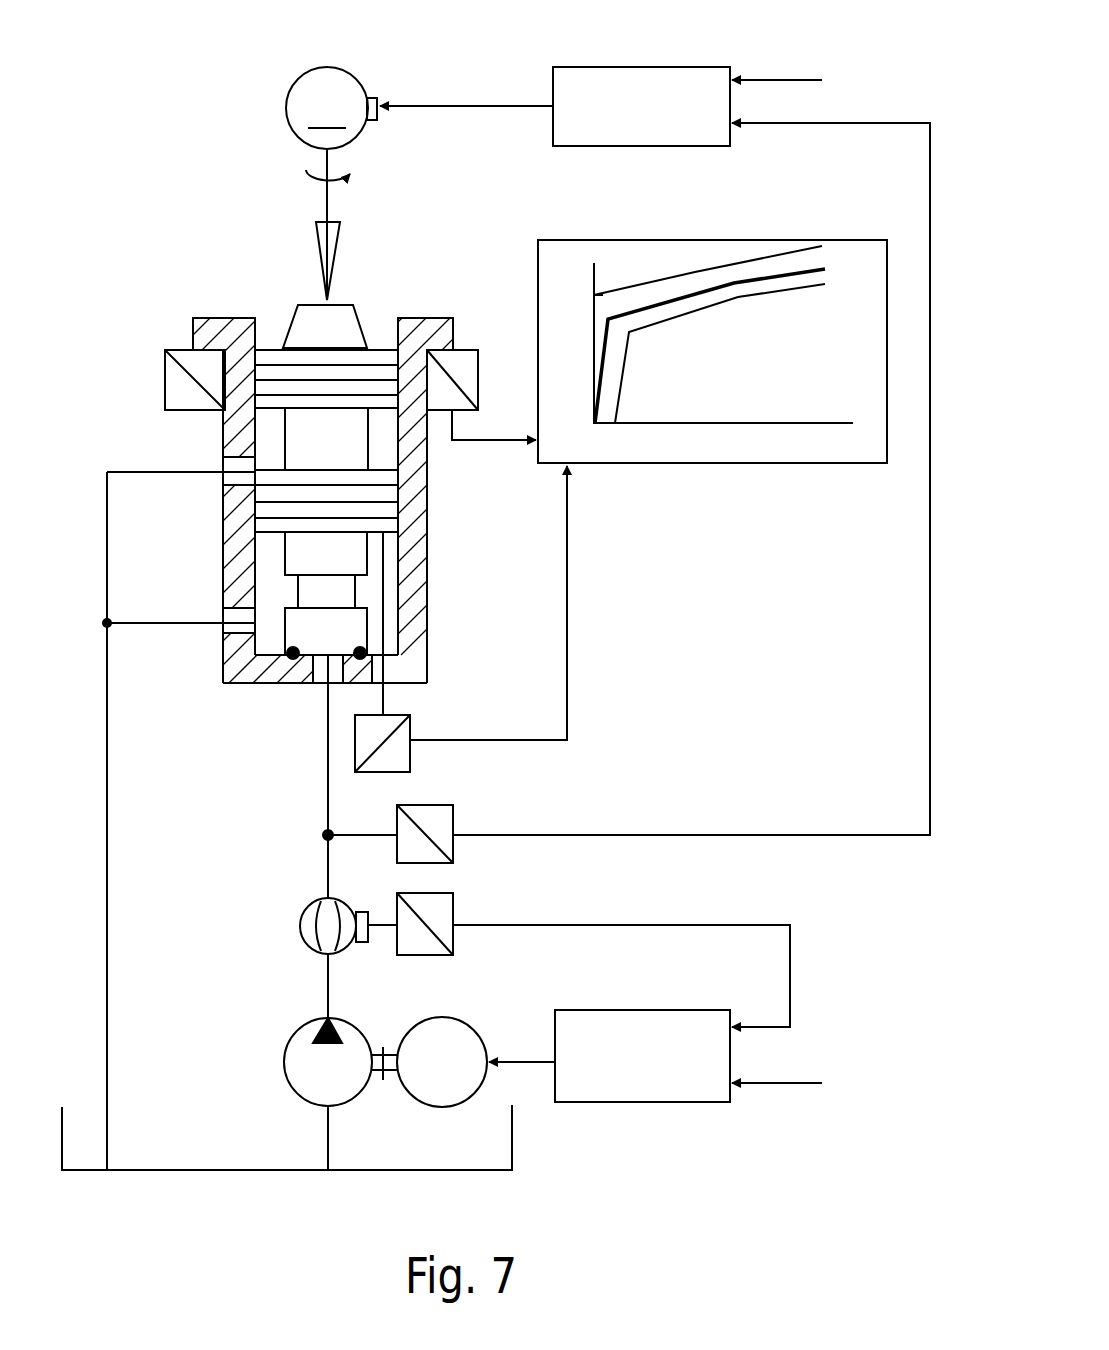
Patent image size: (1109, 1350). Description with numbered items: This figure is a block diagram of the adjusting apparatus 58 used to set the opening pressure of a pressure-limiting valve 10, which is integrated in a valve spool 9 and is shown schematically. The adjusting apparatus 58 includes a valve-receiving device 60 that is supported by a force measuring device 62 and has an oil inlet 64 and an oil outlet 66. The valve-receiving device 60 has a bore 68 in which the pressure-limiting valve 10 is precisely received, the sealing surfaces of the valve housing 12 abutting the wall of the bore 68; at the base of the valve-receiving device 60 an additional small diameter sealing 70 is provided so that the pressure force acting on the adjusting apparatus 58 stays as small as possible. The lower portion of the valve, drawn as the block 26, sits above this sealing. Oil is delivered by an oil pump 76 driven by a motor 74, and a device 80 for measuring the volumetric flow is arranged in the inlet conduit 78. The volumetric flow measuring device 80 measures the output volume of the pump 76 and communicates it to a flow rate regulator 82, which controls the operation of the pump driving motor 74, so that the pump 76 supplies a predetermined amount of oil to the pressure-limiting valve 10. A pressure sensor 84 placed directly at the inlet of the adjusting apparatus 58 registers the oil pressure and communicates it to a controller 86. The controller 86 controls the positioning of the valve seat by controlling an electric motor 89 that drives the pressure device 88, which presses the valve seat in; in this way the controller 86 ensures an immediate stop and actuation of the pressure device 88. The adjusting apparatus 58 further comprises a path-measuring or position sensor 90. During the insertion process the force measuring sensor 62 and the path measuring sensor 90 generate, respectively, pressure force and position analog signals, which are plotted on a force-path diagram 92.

The adjusting apparatus 58 is at (190, 152).
The electric motor 89 is at (357, 76).
The pressure device 88 is at (334, 246).
The controller 86 is at (620, 66).
The pressure sensor 84 is at (455, 818).
The force-path diagram 92 is at (815, 448).
The valve-receiving device 60 is at (236, 442).
The bore 68 is at (396, 326).
The oil inlet 64 is at (320, 684).
The small diameter sealing 70 is at (263, 682).
The oil outlet 66 is at (236, 480).
The force measuring device 62 is at (165, 372).
The pressure-limiting valve 10 is at (287, 378).
The valve spool 9 is at (385, 492).
The valve housing 12 is at (350, 557).
The piston block 26 is at (350, 630).
The path-measuring sensor 90 is at (407, 735).
The inlet conduit 78 is at (327, 798).
The volumetric flow measuring device 80 is at (303, 928).
The oil pump 76 is at (350, 1038).
The motor 74 is at (457, 1037).
The flow rate regulator 82 is at (680, 1097).